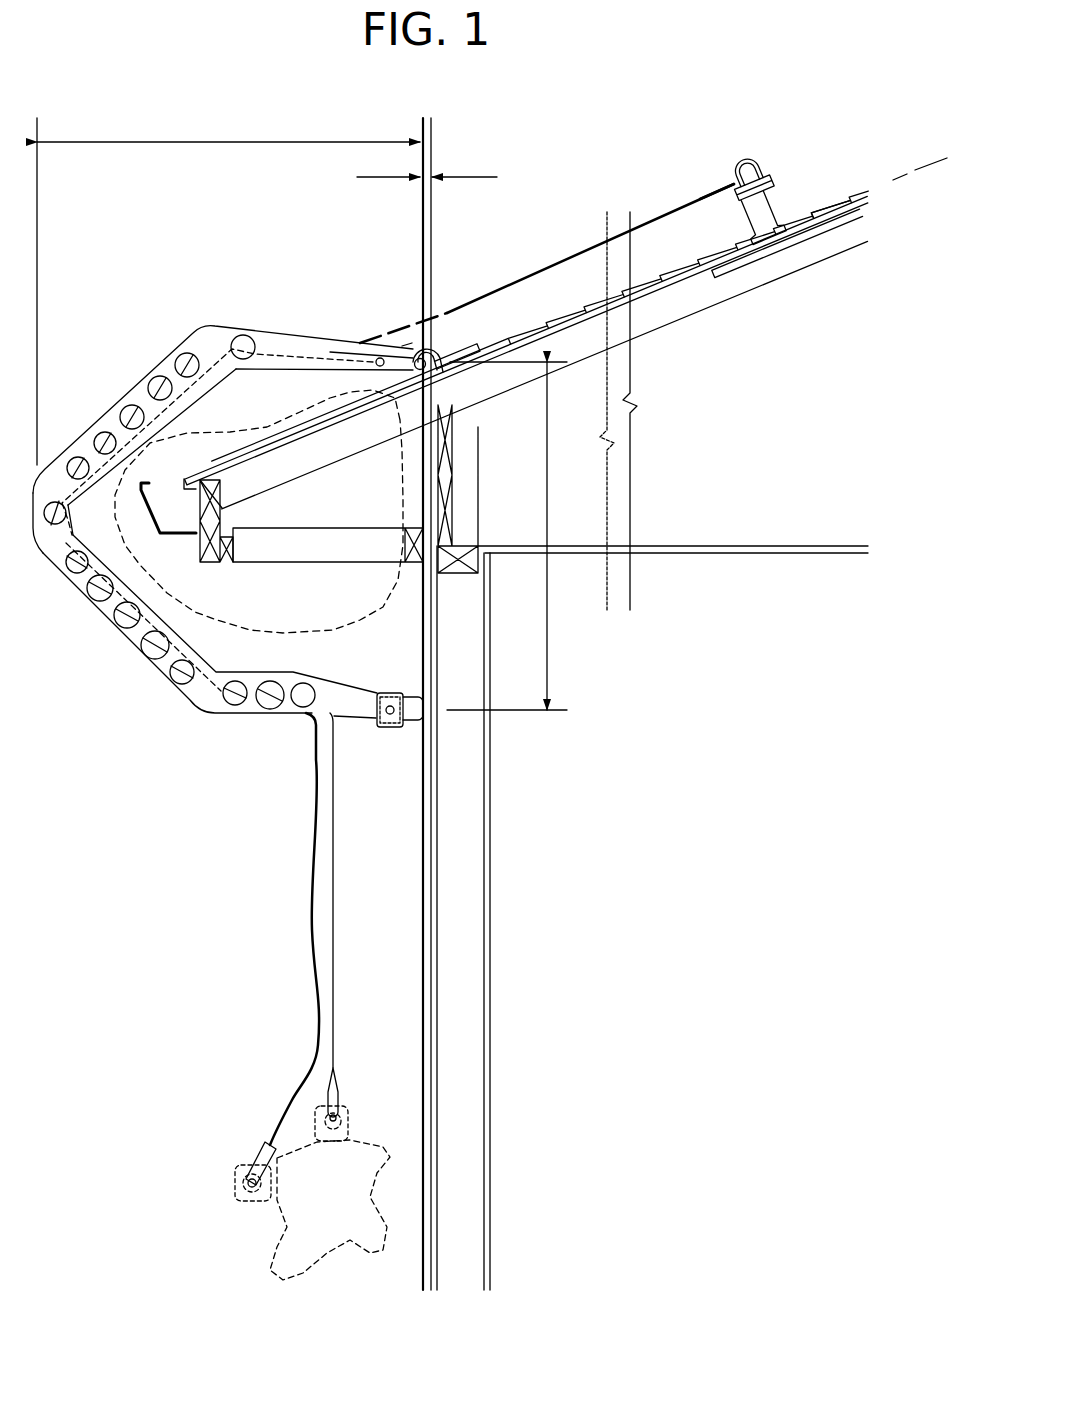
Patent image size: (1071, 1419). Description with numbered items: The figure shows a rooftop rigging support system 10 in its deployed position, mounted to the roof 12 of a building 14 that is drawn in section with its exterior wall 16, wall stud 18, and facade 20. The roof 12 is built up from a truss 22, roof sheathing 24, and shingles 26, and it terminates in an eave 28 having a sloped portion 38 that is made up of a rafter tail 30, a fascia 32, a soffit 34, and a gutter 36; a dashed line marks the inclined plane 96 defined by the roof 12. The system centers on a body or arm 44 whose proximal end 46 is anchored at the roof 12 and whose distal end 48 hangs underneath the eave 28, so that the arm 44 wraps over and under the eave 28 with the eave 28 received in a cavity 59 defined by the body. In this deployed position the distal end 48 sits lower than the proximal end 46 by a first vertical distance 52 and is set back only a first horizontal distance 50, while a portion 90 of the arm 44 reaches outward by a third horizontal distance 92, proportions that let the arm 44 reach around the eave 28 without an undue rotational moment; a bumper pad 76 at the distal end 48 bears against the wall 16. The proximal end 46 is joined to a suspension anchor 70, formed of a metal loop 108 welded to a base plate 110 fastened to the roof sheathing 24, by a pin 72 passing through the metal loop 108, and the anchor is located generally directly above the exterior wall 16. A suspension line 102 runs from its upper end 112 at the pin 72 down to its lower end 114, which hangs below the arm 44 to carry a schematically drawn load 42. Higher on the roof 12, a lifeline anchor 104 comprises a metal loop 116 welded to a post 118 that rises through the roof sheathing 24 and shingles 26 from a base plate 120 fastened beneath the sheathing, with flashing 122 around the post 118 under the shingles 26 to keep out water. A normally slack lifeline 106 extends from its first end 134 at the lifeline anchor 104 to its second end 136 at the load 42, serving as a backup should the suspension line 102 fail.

The rooftop rigging support system 10 is at (110, 88).
The roof 12 is at (534, 353).
The building 14 is at (423, 888).
The exterior wall 16 is at (423, 933).
The wall stud 18 is at (465, 912).
The facade 20 is at (423, 978).
The truss 22 is at (545, 374).
The roof sheathing 24 is at (527, 340).
The shingles 26 is at (541, 327).
The eave 28 is at (348, 625).
The rafter tail 30 is at (323, 467).
The fascia 32 is at (195, 548).
The soffit 34 is at (293, 563).
The gutter 36 is at (160, 507).
The sloped portion 38 is at (235, 453).
The load 42 is at (270, 1252).
The arm 44 is at (157, 683).
The proximal end 46 is at (406, 345).
The distal end 48 is at (388, 740).
The first horizontal distance 50 is at (476, 177).
The first vertical distance 52 is at (547, 588).
The cavity 59 is at (97, 522).
The suspension anchor 70 is at (455, 343).
The pin 72 is at (428, 372).
The bumper pad 76 is at (413, 693).
The portion of the arm 90 is at (230, 430).
The third horizontal distance 92 is at (217, 142).
The inclined plane 96 is at (920, 168).
The suspension line 102 is at (318, 338).
The lifeline anchor 104 is at (757, 199).
The lifeline 106 is at (565, 273).
The metal loop 108 is at (432, 350).
The base plate 110 is at (457, 356).
The upper end 112 is at (363, 358).
The lower end 114 is at (333, 1064).
The metal loop 116 is at (747, 170).
The post 118 is at (761, 210).
The base plate 120 is at (787, 243).
The flashing 122 is at (831, 207).
The first end 134 is at (727, 183).
The second end 136 is at (280, 1120).